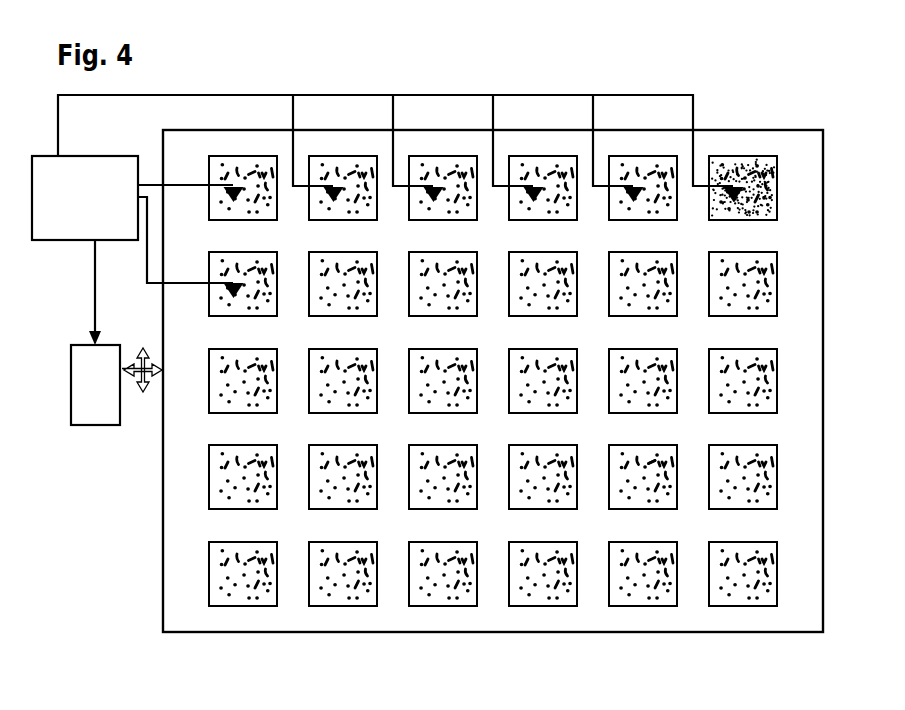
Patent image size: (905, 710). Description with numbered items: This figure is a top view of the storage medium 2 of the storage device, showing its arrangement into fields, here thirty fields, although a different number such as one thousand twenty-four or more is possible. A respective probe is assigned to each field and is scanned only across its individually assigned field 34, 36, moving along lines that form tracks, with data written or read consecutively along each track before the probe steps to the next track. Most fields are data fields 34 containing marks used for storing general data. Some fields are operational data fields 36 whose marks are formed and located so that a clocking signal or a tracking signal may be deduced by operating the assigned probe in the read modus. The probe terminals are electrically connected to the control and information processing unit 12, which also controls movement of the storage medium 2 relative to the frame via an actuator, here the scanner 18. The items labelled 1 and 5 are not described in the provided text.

The culture plate 1 is at (760, 130).
The storage medium 2 is at (454, 429).
The cells 5 is at (655, 460).
The control and information processing unit 12 is at (55, 242).
The scanner 18 is at (97, 427).
The data field 34 is at (355, 220).
The operational data field 36 is at (255, 220).